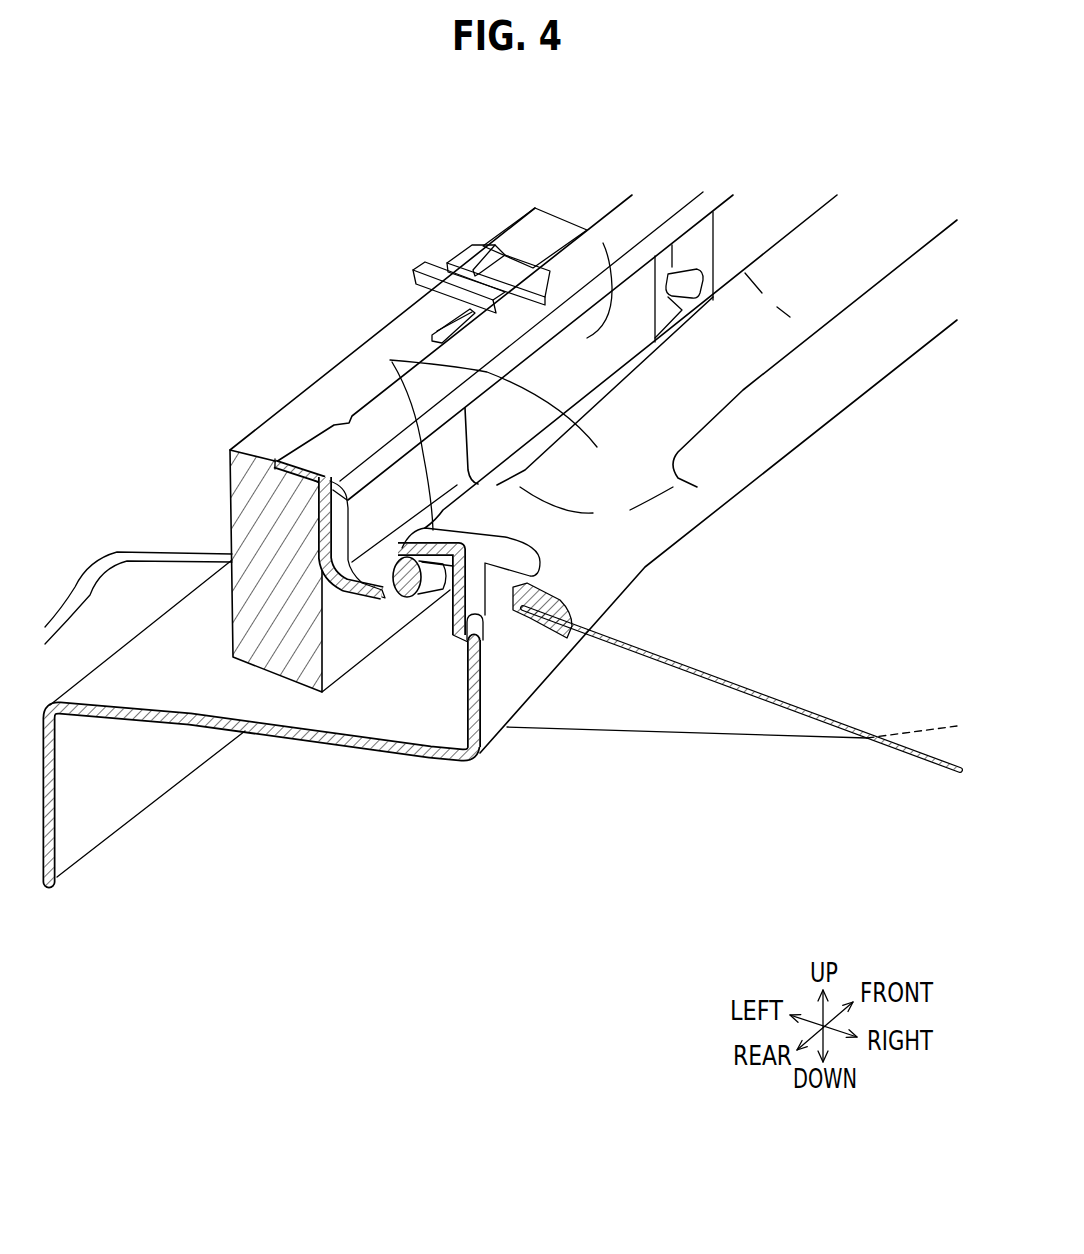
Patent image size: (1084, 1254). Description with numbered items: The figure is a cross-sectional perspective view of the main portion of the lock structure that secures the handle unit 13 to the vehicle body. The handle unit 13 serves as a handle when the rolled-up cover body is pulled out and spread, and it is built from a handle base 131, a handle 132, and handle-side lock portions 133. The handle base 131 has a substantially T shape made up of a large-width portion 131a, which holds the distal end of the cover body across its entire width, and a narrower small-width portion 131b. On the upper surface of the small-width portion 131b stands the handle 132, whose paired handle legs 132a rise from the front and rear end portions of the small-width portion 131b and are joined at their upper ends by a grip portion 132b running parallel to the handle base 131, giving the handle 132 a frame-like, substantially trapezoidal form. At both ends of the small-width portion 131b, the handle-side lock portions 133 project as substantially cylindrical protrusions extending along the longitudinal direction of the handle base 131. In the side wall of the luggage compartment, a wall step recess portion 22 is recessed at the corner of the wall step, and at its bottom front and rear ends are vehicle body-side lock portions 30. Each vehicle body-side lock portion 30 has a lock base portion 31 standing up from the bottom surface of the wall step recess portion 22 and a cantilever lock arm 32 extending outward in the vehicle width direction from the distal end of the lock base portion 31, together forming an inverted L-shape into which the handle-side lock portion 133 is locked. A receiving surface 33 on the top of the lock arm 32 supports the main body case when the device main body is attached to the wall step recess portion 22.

The handle unit 13 is at (647, 567).
The handle base 131 is at (614, 501).
The large-width portion 131a is at (565, 580).
The small-width portion 131b is at (487, 512).
The handle 132 is at (533, 405).
The handle legs 132a is at (390, 360).
The grip portion 132b is at (732, 303).
The handle-side lock portion 133 is at (255, 450).
The wall step recess portion 22 is at (512, 220).
The vehicle body-side lock portion 30 is at (477, 580).
The lock base portion 31 is at (452, 580).
The lock arm 32 is at (432, 578).
The receiving surface 33 is at (321, 560).